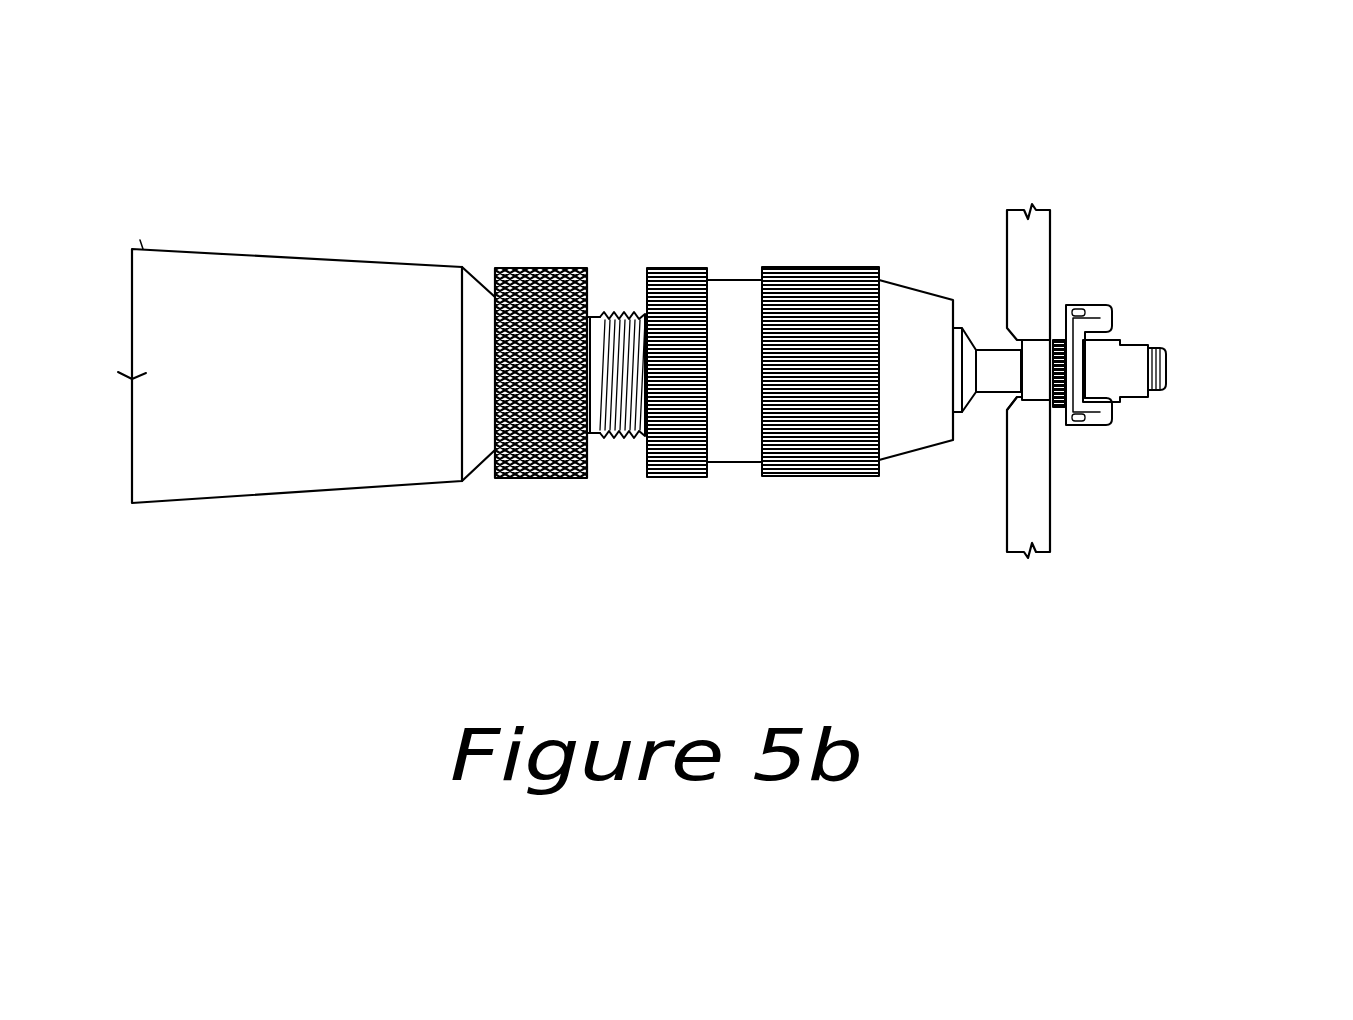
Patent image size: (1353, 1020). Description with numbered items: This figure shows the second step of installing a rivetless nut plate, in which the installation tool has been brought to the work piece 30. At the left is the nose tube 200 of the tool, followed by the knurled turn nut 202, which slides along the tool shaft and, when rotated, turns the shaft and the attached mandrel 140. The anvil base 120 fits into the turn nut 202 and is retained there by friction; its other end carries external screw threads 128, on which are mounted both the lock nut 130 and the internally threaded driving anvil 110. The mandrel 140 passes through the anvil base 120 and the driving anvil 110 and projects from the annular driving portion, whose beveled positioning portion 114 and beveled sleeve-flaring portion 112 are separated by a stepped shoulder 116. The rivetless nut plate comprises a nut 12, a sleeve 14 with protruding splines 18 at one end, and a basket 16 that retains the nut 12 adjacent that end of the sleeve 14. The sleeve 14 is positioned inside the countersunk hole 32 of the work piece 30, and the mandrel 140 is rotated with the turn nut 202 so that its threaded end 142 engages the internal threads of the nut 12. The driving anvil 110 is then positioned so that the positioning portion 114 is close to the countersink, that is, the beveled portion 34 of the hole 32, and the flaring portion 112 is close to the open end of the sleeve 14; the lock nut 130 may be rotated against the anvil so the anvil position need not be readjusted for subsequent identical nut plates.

The nose tube 200 is at (273, 285).
The turn nut 202 is at (547, 268).
The anvil base 120 is at (590, 312).
The screw threads 128 is at (632, 435).
The lock nut 130 is at (683, 477).
The driving anvil 110 is at (877, 268).
The stepped shoulder 116 is at (975, 330).
The positioning portion 114 is at (958, 418).
The mandrel 140 is at (997, 395).
The sleeve-flaring portion 112 is at (970, 343).
The work piece 30 is at (1038, 257).
The hole 32 is at (1030, 337).
The beveled portion 34 is at (1013, 410).
The splines 18 is at (1053, 410).
The sleeve 14 is at (1050, 340).
The basket 16 is at (1093, 435).
The nut 12 is at (1118, 353).
The threaded end 142 is at (1158, 392).